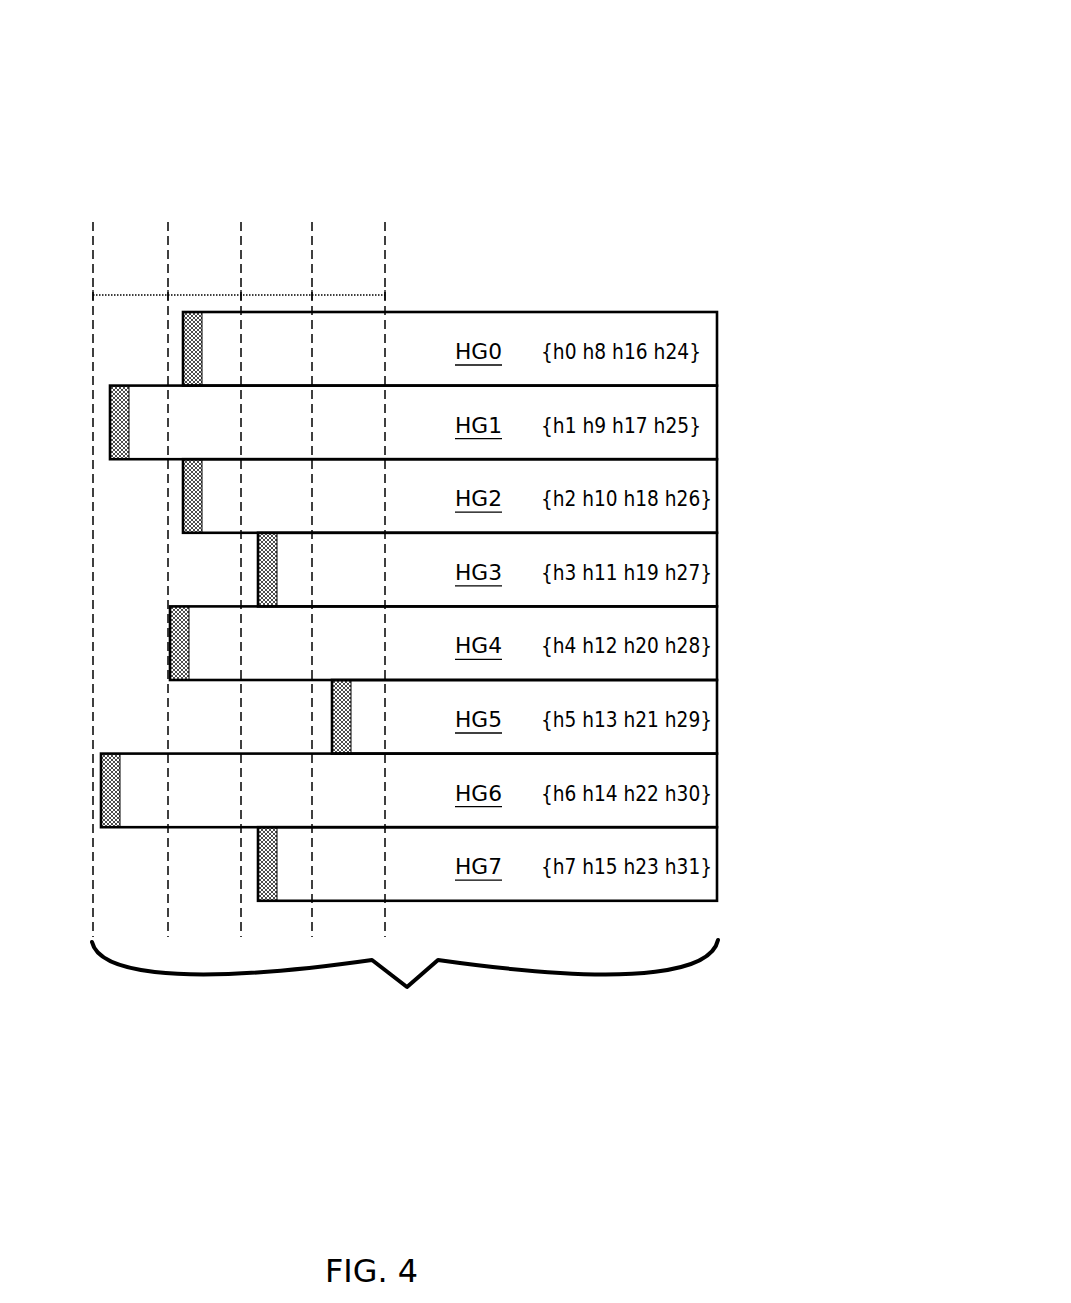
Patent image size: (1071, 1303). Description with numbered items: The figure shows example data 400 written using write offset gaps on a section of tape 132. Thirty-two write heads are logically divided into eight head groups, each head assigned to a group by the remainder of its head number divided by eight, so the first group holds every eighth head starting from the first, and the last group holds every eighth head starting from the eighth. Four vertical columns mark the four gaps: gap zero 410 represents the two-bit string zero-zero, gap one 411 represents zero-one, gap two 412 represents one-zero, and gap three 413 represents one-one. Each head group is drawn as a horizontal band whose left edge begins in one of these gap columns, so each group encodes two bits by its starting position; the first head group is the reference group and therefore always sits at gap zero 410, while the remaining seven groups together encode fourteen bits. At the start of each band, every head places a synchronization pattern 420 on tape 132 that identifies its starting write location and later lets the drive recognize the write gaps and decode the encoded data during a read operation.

The example data 400 is at (812, 53).
The gap 3 413 is at (128, 217).
The gap 0 410 is at (203, 217).
The gap 1 411 is at (277, 217).
The gap 2 412 is at (350, 217).
The synchronization pattern 420 is at (188, 362).
The tape 132 is at (405, 992).